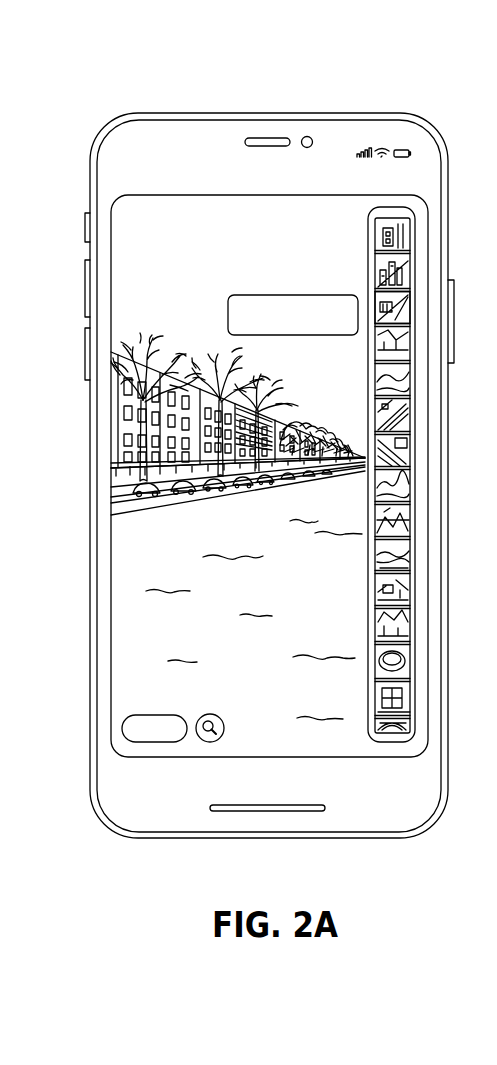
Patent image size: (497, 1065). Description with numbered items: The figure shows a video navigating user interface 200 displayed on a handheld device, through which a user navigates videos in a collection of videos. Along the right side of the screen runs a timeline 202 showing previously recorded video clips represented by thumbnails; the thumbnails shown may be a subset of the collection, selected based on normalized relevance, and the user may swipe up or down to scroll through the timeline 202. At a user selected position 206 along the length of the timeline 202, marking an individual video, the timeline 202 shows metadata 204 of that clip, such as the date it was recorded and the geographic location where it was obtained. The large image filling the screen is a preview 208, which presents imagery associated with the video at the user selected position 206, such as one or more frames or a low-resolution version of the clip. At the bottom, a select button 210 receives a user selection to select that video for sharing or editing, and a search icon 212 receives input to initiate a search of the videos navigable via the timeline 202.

The video navigating user interface 200 is at (361, 95).
The timeline 202 is at (408, 223).
The metadata 204 is at (350, 300).
The user selected position 206 is at (407, 315).
The preview 208 is at (130, 230).
The select button 210 is at (130, 727).
The search icon 212 is at (200, 738).